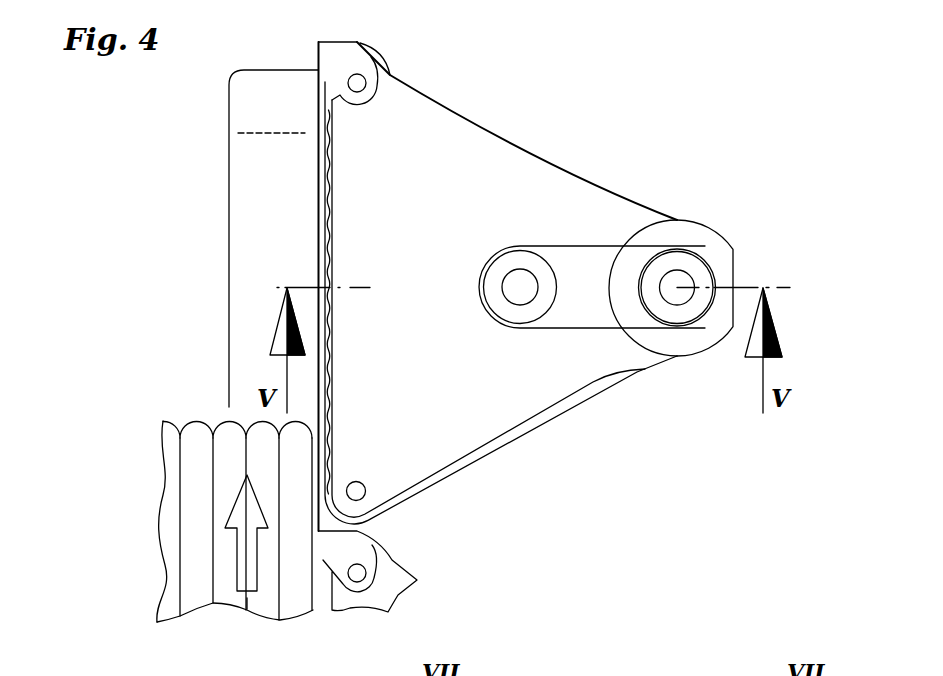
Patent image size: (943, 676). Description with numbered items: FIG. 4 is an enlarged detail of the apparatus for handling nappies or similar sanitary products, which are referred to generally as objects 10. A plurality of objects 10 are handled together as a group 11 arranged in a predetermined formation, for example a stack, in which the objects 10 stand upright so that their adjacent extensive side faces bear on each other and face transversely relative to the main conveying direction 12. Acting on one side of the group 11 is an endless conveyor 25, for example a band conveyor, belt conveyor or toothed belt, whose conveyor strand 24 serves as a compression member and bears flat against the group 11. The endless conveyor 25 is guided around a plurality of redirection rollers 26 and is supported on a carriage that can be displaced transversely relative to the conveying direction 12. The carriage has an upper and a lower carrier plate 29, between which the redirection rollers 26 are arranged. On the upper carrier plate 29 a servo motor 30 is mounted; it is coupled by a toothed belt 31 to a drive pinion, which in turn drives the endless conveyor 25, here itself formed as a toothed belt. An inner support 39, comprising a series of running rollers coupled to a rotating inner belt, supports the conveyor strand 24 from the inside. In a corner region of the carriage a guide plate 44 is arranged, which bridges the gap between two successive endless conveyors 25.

The object 10 is at (195, 443).
The group 11 is at (126, 575).
The conveying direction 12 is at (240, 508).
The conveyor strand 24 is at (318, 98).
The endless conveyor 25 is at (501, 463).
The redirection roller 26 is at (377, 62).
The carrier plate 29 is at (467, 157).
The servo motor 30 is at (533, 310).
The toothed belt 31 is at (577, 246).
The inner support 39 is at (306, 229).
The guide plate 44 is at (338, 53).